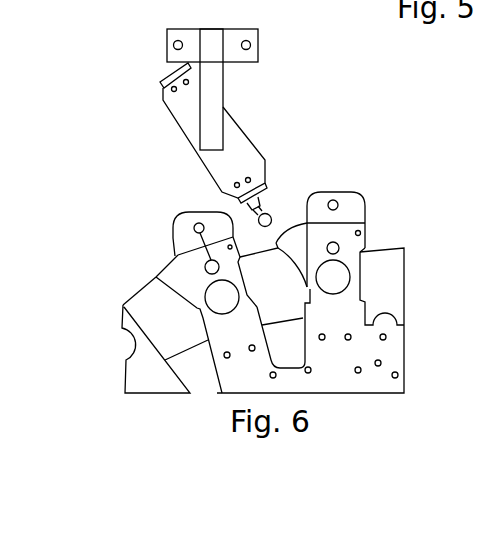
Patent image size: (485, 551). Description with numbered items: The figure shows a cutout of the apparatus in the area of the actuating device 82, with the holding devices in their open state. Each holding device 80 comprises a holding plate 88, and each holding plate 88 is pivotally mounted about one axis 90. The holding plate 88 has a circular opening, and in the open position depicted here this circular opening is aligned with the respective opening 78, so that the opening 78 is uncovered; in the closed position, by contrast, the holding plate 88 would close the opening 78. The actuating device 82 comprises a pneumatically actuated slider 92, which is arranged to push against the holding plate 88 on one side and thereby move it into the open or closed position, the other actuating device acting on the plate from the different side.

The opening 78 is at (212, 300).
The holding device 80 is at (172, 227).
The actuating device 82 is at (210, 50).
The holding plate 88 is at (170, 275).
The axis 90 is at (196, 222).
The pneumatically actuated slider 92 is at (265, 205).